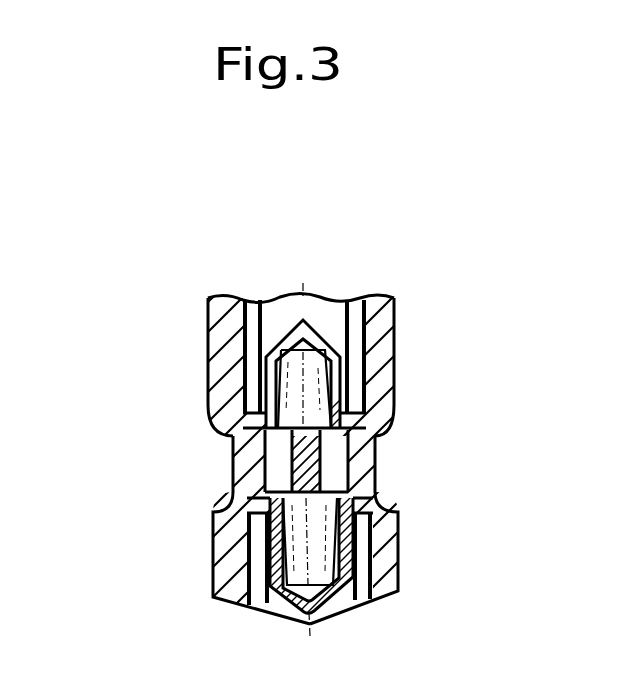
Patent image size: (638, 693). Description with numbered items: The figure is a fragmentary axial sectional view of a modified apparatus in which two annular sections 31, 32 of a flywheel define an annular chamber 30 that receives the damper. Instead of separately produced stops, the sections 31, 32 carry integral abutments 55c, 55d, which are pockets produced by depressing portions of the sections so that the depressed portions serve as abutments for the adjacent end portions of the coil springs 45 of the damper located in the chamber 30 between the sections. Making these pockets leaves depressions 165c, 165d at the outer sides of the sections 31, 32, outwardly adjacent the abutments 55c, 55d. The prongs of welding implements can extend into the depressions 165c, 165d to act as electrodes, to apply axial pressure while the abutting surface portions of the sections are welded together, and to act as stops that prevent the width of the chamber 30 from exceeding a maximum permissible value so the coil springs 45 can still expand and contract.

The annular chamber 30 is at (272, 302).
The annular section 31 is at (209, 380).
The annular section 32 is at (394, 370).
The depression 165c is at (226, 447).
The depression 165d is at (376, 447).
The abutment 55c is at (247, 467).
The abutment 55d is at (377, 458).
The coil spring 45 is at (358, 589).